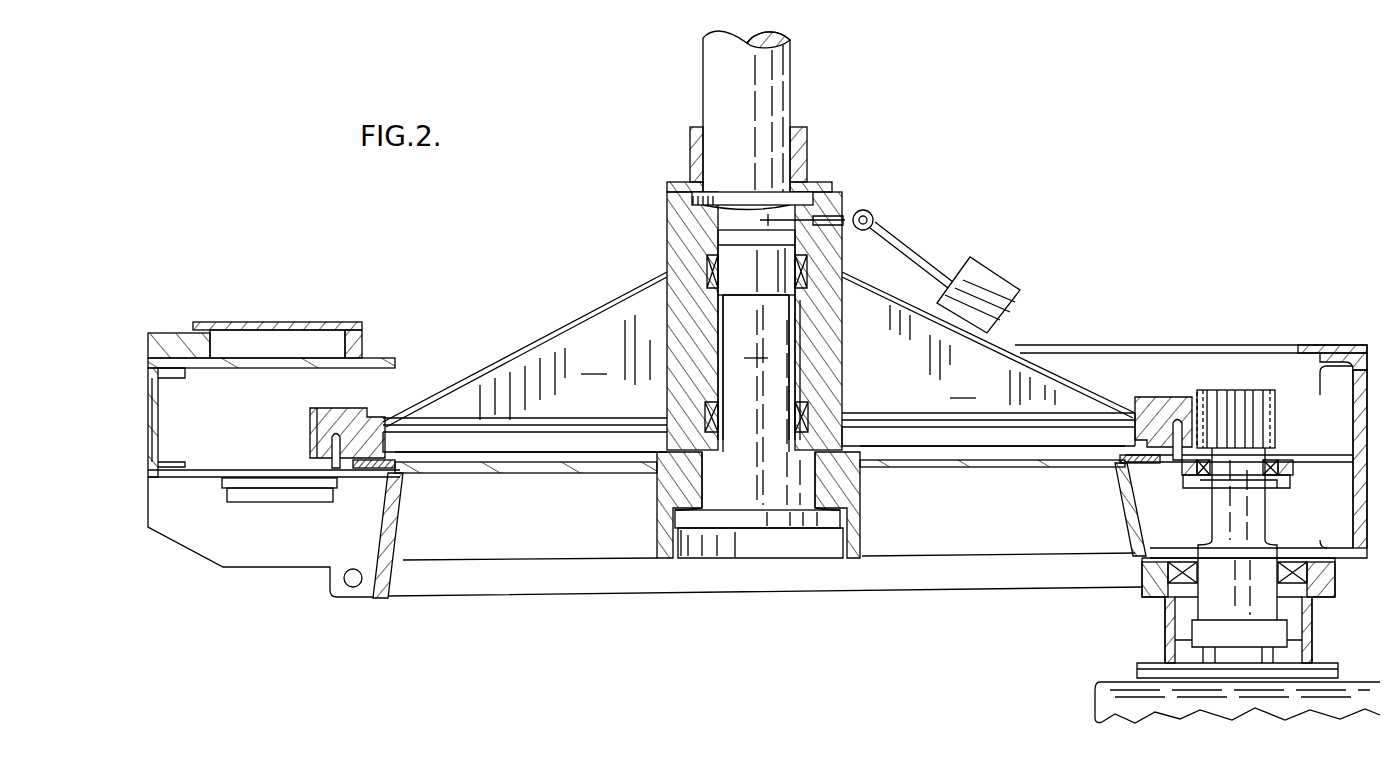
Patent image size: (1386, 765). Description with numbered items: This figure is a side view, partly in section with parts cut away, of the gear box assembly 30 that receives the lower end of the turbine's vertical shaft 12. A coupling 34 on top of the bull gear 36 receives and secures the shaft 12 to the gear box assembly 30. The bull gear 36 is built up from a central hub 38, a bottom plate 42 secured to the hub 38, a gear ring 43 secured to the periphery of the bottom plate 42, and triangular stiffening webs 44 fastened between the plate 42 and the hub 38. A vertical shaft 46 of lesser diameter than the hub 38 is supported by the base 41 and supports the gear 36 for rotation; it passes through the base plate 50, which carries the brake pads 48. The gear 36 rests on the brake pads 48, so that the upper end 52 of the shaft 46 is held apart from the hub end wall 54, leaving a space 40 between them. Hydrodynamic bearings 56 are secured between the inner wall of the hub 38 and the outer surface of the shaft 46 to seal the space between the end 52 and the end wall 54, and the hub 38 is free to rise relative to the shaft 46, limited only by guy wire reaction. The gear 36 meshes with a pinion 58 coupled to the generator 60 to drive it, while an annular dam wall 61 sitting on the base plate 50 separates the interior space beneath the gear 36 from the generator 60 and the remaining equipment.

The vertical axis shaft 12 is at (777, 80).
The gear box assembly 30 is at (1220, 302).
The coupling 34 is at (803, 163).
The bull gear 36 is at (575, 284).
The central hub 38 is at (842, 345).
The space 40 is at (752, 245).
The base 41 is at (773, 570).
The bottom plate 42 is at (420, 440).
The gear ring 43 is at (330, 412).
The triangular stiffening webs 44 is at (767, 362).
The vertical shaft 46 is at (759, 426).
The brake pads 48 is at (367, 470).
The base plate 50 is at (958, 467).
The upper end of shaft 52 is at (718, 240).
The hub end wall 54 is at (733, 213).
The hydrodynamic bearings 56 is at (683, 398).
The pinion 58 is at (1238, 390).
The generator 60 is at (1205, 480).
The annular dam wall 61 is at (333, 452).